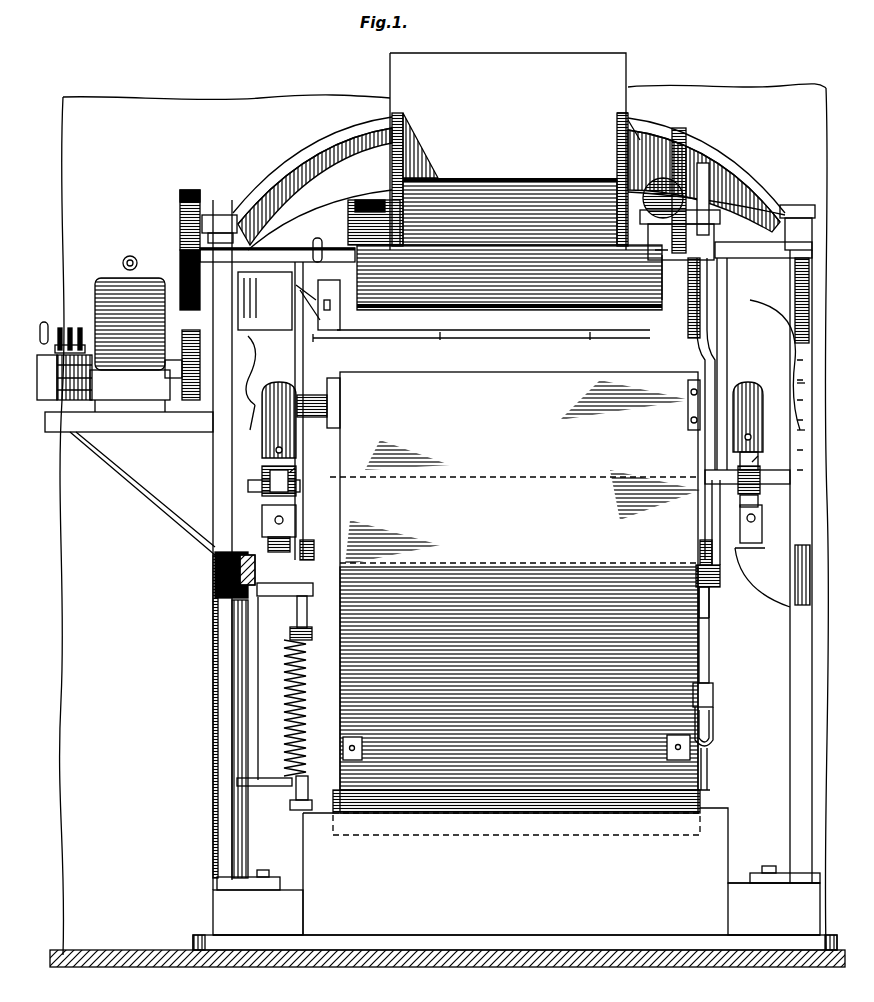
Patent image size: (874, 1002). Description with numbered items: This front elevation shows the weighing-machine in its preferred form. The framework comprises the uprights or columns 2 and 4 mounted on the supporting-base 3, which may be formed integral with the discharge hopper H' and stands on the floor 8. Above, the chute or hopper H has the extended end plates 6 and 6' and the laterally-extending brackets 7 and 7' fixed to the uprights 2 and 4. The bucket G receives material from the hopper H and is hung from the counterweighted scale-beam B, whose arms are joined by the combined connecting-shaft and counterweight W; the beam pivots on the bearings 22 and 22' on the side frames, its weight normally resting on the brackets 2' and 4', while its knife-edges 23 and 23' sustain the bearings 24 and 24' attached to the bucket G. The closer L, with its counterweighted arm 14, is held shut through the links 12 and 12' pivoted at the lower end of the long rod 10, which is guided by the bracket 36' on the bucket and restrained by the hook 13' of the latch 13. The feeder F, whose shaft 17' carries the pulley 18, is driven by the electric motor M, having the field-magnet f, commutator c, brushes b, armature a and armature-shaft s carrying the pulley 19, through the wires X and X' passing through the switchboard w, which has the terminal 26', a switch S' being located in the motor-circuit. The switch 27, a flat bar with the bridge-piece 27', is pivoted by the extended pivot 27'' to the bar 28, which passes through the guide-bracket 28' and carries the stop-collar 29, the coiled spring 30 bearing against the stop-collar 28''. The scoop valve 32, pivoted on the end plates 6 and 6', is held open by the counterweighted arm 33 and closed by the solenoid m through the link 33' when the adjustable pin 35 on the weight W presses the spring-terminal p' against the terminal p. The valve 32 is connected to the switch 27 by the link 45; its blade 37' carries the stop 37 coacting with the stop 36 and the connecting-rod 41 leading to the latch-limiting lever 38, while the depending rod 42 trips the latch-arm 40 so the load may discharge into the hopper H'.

The chute or hopper H is at (509, 151).
The extended end plate 6 is at (420, 145).
The extended end plate 6' is at (612, 142).
The feeder F is at (479, 190).
The valve 32 is at (508, 293).
The counterweighted arm 33 is at (374, 205).
The link 33' is at (645, 290).
The laterally-extending bracket 7 is at (312, 183).
The laterally-extending bracket 7' is at (706, 175).
The solenoid m is at (655, 192).
The rod 10 is at (703, 182).
The blade 37' is at (765, 231).
The connecting-rod 41 is at (722, 314).
The stop 37 is at (683, 409).
The stop 36 is at (731, 364).
The upright or column 4 is at (786, 566).
The bracket 4' is at (762, 587).
The spring-terminal p is at (784, 391).
The spring-terminal p' is at (789, 442).
The bearing 24' is at (705, 422).
The knife-edge 23' is at (699, 464).
The bearing 22' is at (719, 483).
The depending rod 42 is at (722, 443).
The lever 38 is at (713, 516).
The adjustable pin 35 is at (770, 528).
The latch-arm 40 is at (708, 557).
The latch 13 is at (685, 567).
The hook 13' is at (722, 607).
The bracket 36' is at (723, 695).
The link 12' is at (724, 726).
The link 12 is at (717, 769).
The scale-beam B is at (292, 472).
The bucket G is at (513, 592).
The combined connecting-shaft and counterweight W is at (338, 477).
The counterweighted arm 14 is at (440, 790).
The hopper H' is at (516, 871).
The closer L is at (502, 817).
The floor 8 is at (460, 952).
The supporting-base 3 is at (516, 900).
The upright or column 2 is at (210, 545).
The bracket 2' is at (213, 575).
The pulley 18 is at (180, 210).
The pulley 19 is at (190, 406).
The terminal 26' is at (277, 245).
The shaft 17' is at (301, 270).
The switch S' is at (322, 239).
The switchboard w is at (265, 301).
The wire X is at (243, 363).
The wire X' is at (259, 398).
The bridge-piece 27' is at (292, 319).
The connecting link 45 is at (322, 300).
The circuit-controller or switch 27 is at (314, 445).
The bearing 24 is at (235, 431).
The knife-edge 23 is at (237, 484).
The bearing 22 is at (230, 528).
The pivot 27'' is at (337, 535).
The bar 28 is at (285, 681).
The stop-collar 28'' is at (240, 635).
The coiled spring 30 is at (292, 661).
The guide-bracket 28' is at (272, 794).
The stop-collar 29 is at (291, 813).
The commutator c is at (63, 416).
The electric motor M is at (130, 391).
The field-magnet f is at (118, 316).
The brush b is at (66, 336).
The armature a is at (50, 395).
The armature-shaft s is at (43, 375).